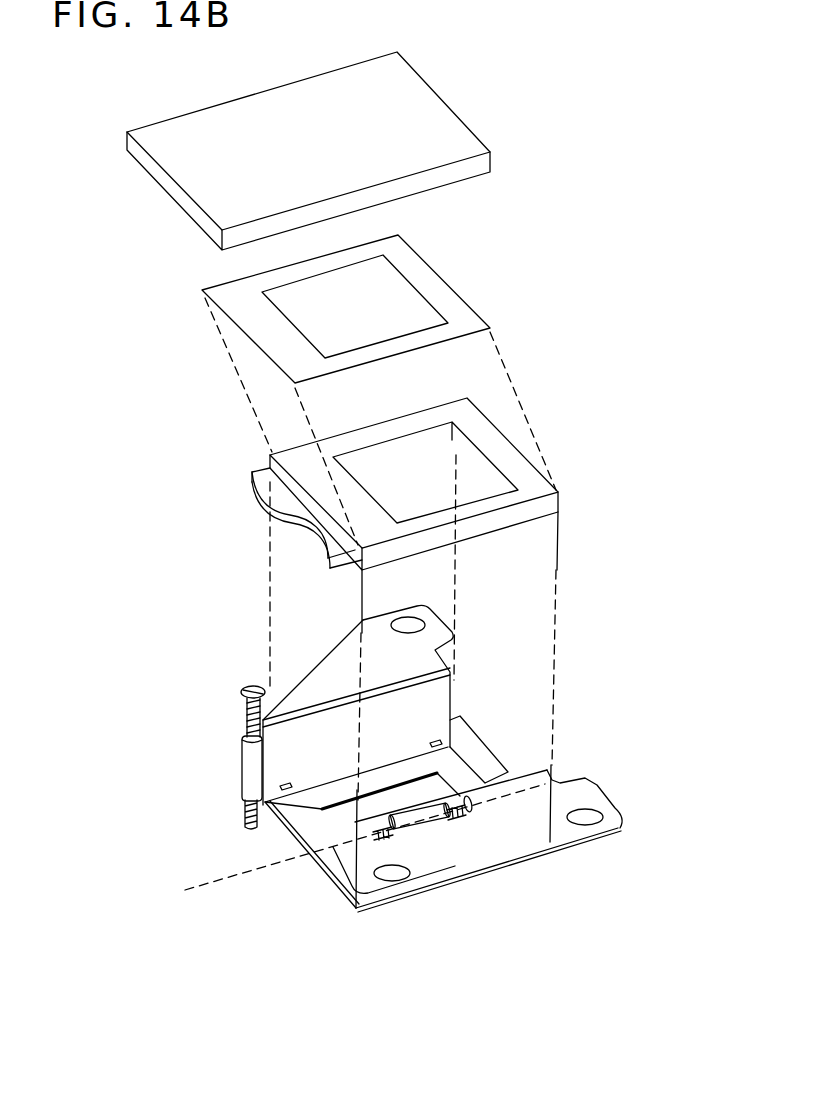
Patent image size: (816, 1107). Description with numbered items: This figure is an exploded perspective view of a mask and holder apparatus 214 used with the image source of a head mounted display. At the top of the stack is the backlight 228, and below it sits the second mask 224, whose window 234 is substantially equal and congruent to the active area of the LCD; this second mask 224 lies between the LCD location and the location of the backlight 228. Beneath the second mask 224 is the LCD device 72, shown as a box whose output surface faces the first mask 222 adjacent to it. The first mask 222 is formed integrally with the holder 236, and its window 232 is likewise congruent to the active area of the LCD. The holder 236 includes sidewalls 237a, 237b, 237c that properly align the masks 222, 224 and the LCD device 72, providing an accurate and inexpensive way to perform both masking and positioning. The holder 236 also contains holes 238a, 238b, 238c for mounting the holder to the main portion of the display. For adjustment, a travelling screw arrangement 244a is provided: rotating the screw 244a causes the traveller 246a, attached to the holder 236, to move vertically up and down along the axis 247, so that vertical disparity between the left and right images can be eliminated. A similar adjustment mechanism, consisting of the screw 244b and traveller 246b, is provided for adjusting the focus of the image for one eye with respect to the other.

The connector assembly 214 is at (680, 7).
The backlight 228 is at (443, 100).
The second mask 224 is at (448, 298).
The window 234 is at (400, 280).
The LCD device 72 is at (513, 463).
The holder 236 is at (450, 708).
The mounting hole 238a is at (430, 618).
The sidewall 237a is at (438, 697).
The first mask 222 is at (452, 760).
The window 232 is at (295, 833).
The sidewall 237b is at (493, 772).
The mounting hole 238b is at (595, 810).
The sidewall 237c is at (362, 903).
The mounting hole 238c is at (388, 875).
The travelling screw arrangement 244a is at (477, 816).
The traveller 246a is at (428, 825).
The adjustment mechanism screw 244b is at (245, 713).
The adjustment mechanism traveller 246b is at (240, 765).
The axis 247 is at (237, 877).